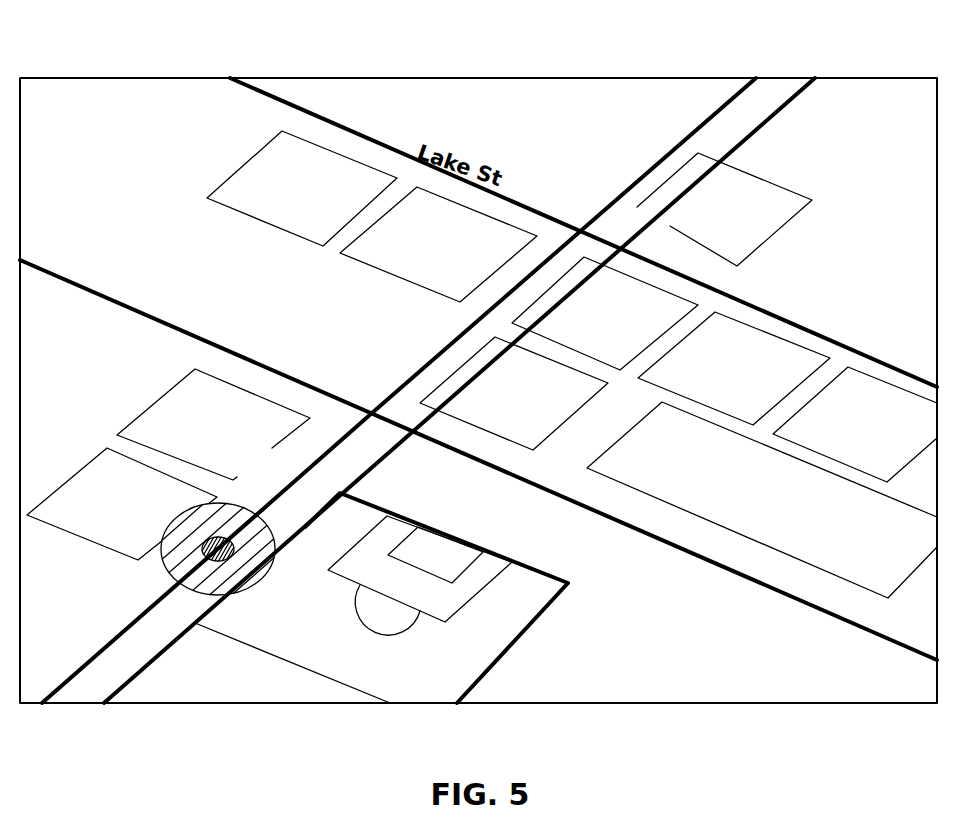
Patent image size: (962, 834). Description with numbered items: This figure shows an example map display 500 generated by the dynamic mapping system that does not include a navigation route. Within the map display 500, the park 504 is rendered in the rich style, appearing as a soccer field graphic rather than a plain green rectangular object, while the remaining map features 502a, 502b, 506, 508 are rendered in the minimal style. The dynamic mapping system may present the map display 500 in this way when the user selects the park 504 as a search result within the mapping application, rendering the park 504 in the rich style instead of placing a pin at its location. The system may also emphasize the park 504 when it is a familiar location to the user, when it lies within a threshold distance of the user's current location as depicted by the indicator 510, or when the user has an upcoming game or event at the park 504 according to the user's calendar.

The map display 500 is at (461, 46).
The map feature 502a is at (690, 558).
The map feature 502b is at (375, 408).
The park 504 is at (383, 523).
The map feature 506 is at (642, 280).
The map feature 508 is at (260, 508).
The indicator 510 is at (267, 575).